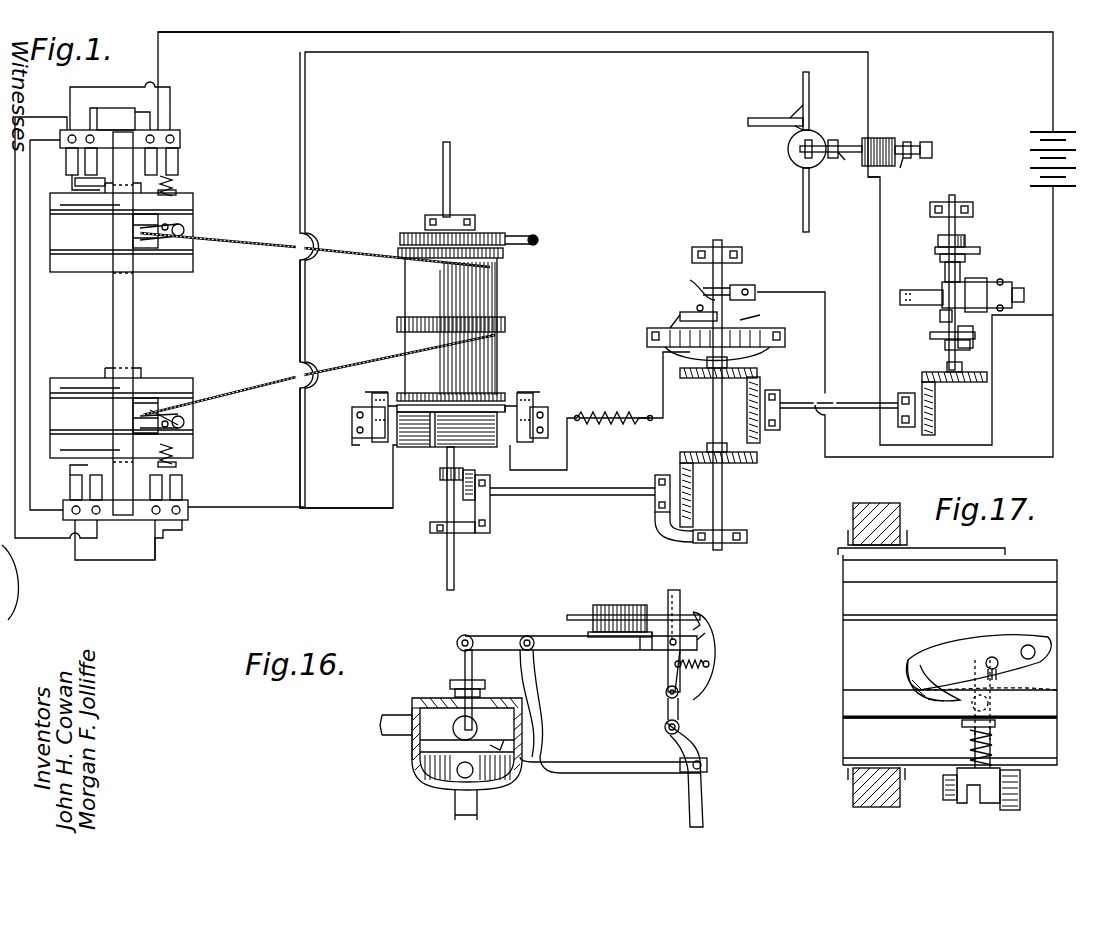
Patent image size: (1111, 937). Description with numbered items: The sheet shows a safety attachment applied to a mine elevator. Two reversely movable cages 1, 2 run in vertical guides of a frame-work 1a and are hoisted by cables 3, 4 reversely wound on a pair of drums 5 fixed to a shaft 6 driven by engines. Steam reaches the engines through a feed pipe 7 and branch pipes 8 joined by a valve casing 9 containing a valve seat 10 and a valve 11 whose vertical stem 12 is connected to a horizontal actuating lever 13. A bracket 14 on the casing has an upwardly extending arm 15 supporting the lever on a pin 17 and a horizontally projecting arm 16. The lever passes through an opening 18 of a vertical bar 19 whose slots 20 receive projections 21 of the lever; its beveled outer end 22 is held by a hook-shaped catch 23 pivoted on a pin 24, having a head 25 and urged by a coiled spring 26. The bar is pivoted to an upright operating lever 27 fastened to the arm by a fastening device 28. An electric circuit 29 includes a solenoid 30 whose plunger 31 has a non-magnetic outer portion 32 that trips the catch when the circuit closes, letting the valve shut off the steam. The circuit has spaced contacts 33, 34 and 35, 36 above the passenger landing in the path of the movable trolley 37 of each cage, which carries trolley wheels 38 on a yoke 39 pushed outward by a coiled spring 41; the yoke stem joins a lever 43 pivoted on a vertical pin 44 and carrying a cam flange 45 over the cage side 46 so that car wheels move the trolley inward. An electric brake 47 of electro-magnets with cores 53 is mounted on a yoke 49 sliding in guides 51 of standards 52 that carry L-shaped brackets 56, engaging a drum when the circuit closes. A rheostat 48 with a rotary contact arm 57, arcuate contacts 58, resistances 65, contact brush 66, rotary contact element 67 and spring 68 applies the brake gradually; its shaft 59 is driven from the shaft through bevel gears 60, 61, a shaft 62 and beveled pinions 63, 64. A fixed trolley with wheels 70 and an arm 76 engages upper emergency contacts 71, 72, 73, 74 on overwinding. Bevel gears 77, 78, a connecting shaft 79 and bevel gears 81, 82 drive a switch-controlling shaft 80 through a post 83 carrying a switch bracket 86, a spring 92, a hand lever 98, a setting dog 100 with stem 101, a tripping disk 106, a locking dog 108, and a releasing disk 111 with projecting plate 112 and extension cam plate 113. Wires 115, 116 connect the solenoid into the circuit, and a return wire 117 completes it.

In FIG. 1, the cage 1 is at (112, 418).
In FIG. 17, the cage 1 is at (947, 656).
In FIG. 1, the frame-work 1a is at (112, 290).
In FIG. 17, the frame-work 1a is at (868, 647).
In FIG. 1, the cage 2 is at (115, 245).
In FIG. 1, the cable 3 is at (270, 384).
In FIG. 1, the cable 4 is at (268, 244).
In FIG. 1, the drum 5 is at (404, 278).
In FIG. 1, the shaft 6 is at (447, 556).
In FIG. 1, the feed pipe 7 is at (760, 118).
In FIG. 16, the feed pipe 7 is at (382, 724).
In FIG. 1, the branch pipe 8 is at (809, 78).
In FIG. 16, the branch pipe 8 is at (455, 808).
In FIG. 1, the valve casing 9 is at (788, 150).
In FIG. 16, the valve casing 9 is at (500, 790).
In FIG. 16, the valve seat 10 is at (425, 765).
In FIG. 16, the valve 11 is at (430, 780).
In FIG. 16, the vertical stem 12 is at (465, 676).
In FIG. 1, the actuating lever 13 is at (845, 146).
In FIG. 16, the actuating lever 13 is at (498, 636).
In FIG. 16, the bracket 14 is at (528, 735).
In FIG. 16, the upwardly extending arm 15 is at (535, 677).
In FIG. 16, the horizontally projecting arm 16 is at (602, 773).
In FIG. 16, the pin 17 is at (530, 636).
In FIG. 16, the bifurcation or opening 18 is at (680, 590).
In FIG. 1, the vertical bar or member 19 is at (905, 160).
In FIG. 16, the vertical bar or member 19 is at (665, 694).
In FIG. 16, the slot 20 is at (705, 612).
In FIG. 16, the projection 21 is at (680, 642).
In FIG. 16, the outer end 22 is at (710, 638).
In FIG. 16, the catch 23 is at (710, 678).
In FIG. 16, the pin 24 is at (680, 700).
In FIG. 1, the head 25 is at (932, 150).
In FIG. 16, the head 25 is at (705, 622).
In FIG. 16, the coiled spring 26 is at (712, 666).
In FIG. 16, the operating lever 27 is at (703, 800).
In FIG. 16, the fastening device 28 is at (707, 766).
In FIG. 1, the electric circuit 29 is at (352, 508).
In FIG. 1, the solenoid 30 is at (885, 138).
In FIG. 16, the solenoid 30 is at (617, 605).
In FIG. 1, the plunger 31 is at (852, 158).
In FIG. 16, the plunger 31 is at (572, 615).
In FIG. 1, the outer portion 32 is at (910, 142).
In FIG. 16, the outer portion 32 is at (660, 605).
In FIG. 1, the contact 33 is at (182, 490).
In FIG. 1, the contact 34 is at (156, 520).
In FIG. 1, the contact 35 is at (178, 160).
In FIG. 1, the contact 36 is at (165, 135).
In FIG. 17, the trolley 37 is at (978, 797).
In FIG. 1, the trolley wheel 38 is at (178, 194).
In FIG. 17, the trolley wheel 38 is at (1020, 782).
In FIG. 1, the yoke 39 is at (175, 185).
In FIG. 17, the yoke 39 is at (975, 768).
In FIG. 17, the coiled spring 41 is at (995, 742).
In FIG. 1, the lever 43 is at (160, 240).
In FIG. 17, the lever 43 is at (955, 662).
In FIG. 1, the vertical pin or pivot 44 is at (185, 226).
In FIG. 17, the vertical pin or pivot 44 is at (1035, 660).
In FIG. 1, the cam flange 45 is at (120, 420).
In FIG. 17, the cam flange 45 is at (920, 700).
In FIG. 1, the side of the cage 46 is at (72, 210).
In FIG. 17, the side of the cage 46 is at (1057, 695).
In FIG. 1, the electric brake 47 is at (349, 454).
In FIG. 1, the rheostat 48 is at (647, 338).
In FIG. 1, the yoke 49 is at (502, 392).
In FIG. 1, the guide or way 51 is at (451, 384).
In FIG. 1, the standard 52 is at (352, 418).
In FIG. 1, the core 53 is at (445, 395).
In FIG. 1, the bracket 56 is at (380, 393).
In FIG. 1, the rotary contact arm 57 is at (696, 302).
In FIG. 1, the contact 58 is at (752, 326).
In FIG. 1, the shaft 59 is at (715, 240).
In FIG. 1, the bevel gear 60 is at (718, 442).
In FIG. 1, the bevel gear 61 is at (675, 475).
In FIG. 1, the shaft 62 is at (595, 497).
In FIG. 1, the beveled pinion 63 is at (463, 495).
In FIG. 1, the beveled pinion 64 is at (440, 476).
In FIG. 1, the resistance 65 is at (615, 395).
In FIG. 1, the contact brush 66 is at (750, 285).
In FIG. 1, the rotary contact element 67 is at (690, 278).
In FIG. 1, the spring 68 is at (672, 325).
In FIG. 1, the trolley wheel 70 is at (70, 190).
In FIG. 1, the upper emergency contact 71 is at (125, 510).
In FIG. 1, the upper emergency contact 72 is at (70, 485).
In FIG. 1, the upper emergency contact 73 is at (116, 118).
In FIG. 1, the upper emergency contact 74 is at (72, 160).
In FIG. 1, the arm 76 is at (100, 195).
In FIG. 1, the bevel gear 77 is at (700, 378).
In FIG. 1, the bevel gear 78 is at (762, 382).
In FIG. 1, the connecting shaft 79 is at (845, 402).
In FIG. 1, the switch-controlling shaft 80 is at (958, 202).
In FIG. 1, the bevel gear 81 is at (935, 425).
In FIG. 1, the bevel gear 82 is at (945, 384).
In FIG. 1, the standard or post 83 is at (977, 295).
In FIG. 1, the bracket 86 is at (1024, 296).
In FIG. 1, the spring 92 is at (900, 298).
In FIG. 1, the hand lever 98 is at (945, 275).
In FIG. 1, the setting dog 100 is at (965, 260).
In FIG. 1, the stem 101 is at (980, 252).
In FIG. 1, the tripping disk 106 is at (968, 244).
In FIG. 1, the locking dog 108 is at (940, 316).
In FIG. 1, the disk 111 is at (975, 337).
In FIG. 1, the projecting plate 112 is at (930, 336).
In FIG. 1, the extension cam plate 113 is at (945, 348).
In FIG. 1, the wire 115 is at (880, 250).
In FIG. 1, the wire 116 is at (300, 295).
In FIG. 1, the return wire 117 is at (280, 30).